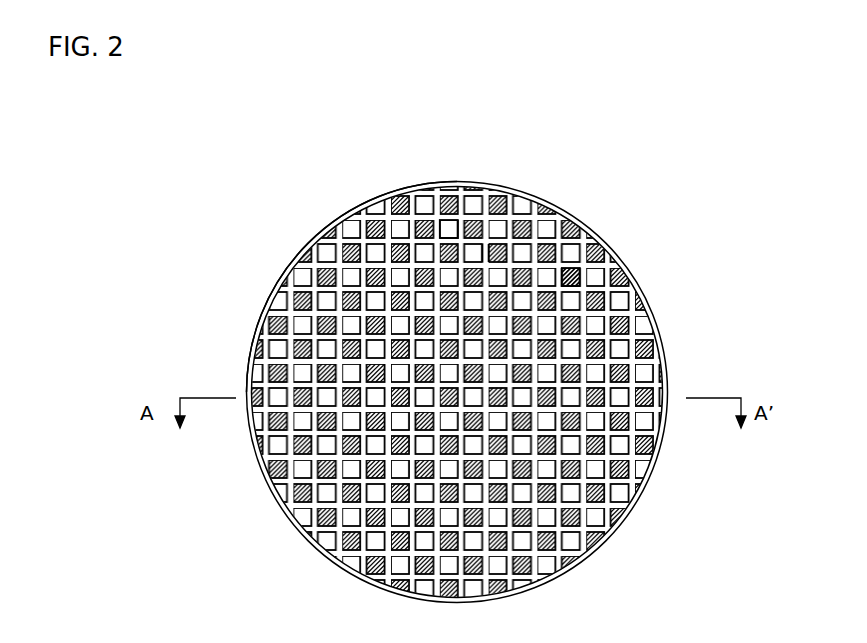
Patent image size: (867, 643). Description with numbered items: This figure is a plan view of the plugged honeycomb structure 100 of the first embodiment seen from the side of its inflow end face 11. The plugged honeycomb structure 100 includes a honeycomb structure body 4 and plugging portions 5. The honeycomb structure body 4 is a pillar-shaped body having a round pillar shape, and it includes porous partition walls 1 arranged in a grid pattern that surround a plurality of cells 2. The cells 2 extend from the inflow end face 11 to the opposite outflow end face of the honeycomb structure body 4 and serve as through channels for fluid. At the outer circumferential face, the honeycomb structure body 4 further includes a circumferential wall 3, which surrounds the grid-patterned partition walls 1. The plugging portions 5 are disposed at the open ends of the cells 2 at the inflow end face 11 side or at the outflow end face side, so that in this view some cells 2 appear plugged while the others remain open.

The plugged honeycomb structure 100 is at (706, 97).
The partition walls 1 is at (477, 237).
The cells 2 is at (442, 220).
The circumferential wall 3 is at (636, 286).
The honeycomb structure body 4 is at (665, 468).
The plugging portions 5 is at (562, 272).
The inflow end face 11 is at (287, 223).